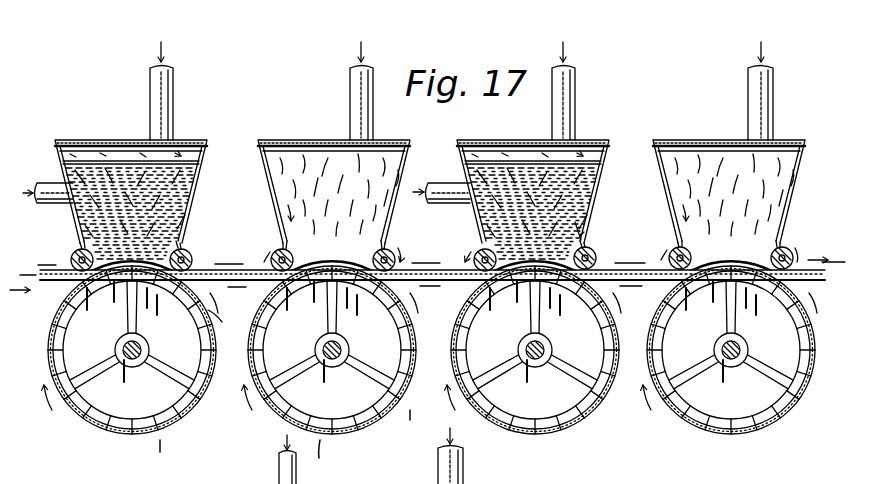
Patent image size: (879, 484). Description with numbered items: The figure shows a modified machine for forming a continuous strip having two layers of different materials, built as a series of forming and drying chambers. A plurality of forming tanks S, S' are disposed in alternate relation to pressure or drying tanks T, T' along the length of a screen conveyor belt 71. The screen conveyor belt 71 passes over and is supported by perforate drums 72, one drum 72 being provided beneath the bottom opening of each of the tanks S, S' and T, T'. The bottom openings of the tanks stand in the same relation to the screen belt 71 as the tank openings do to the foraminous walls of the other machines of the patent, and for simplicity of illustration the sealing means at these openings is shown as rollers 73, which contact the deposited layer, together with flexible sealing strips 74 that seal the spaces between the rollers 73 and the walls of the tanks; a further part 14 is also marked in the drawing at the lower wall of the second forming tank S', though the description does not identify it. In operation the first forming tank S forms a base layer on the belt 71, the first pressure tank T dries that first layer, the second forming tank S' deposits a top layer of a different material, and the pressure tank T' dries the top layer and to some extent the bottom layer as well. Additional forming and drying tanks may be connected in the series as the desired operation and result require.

The scraper bracket 14 is at (578, 228).
The screen conveyor belt 71 is at (459, 282).
The perforate drum 72 is at (110, 437).
The roller 73 is at (183, 251).
The flexible sealing strip 74 is at (82, 247).
The forming tank S is at (122, 150).
The pressure tank T is at (334, 156).
The forming tank S' is at (516, 156).
The pressure tank T' is at (740, 155).